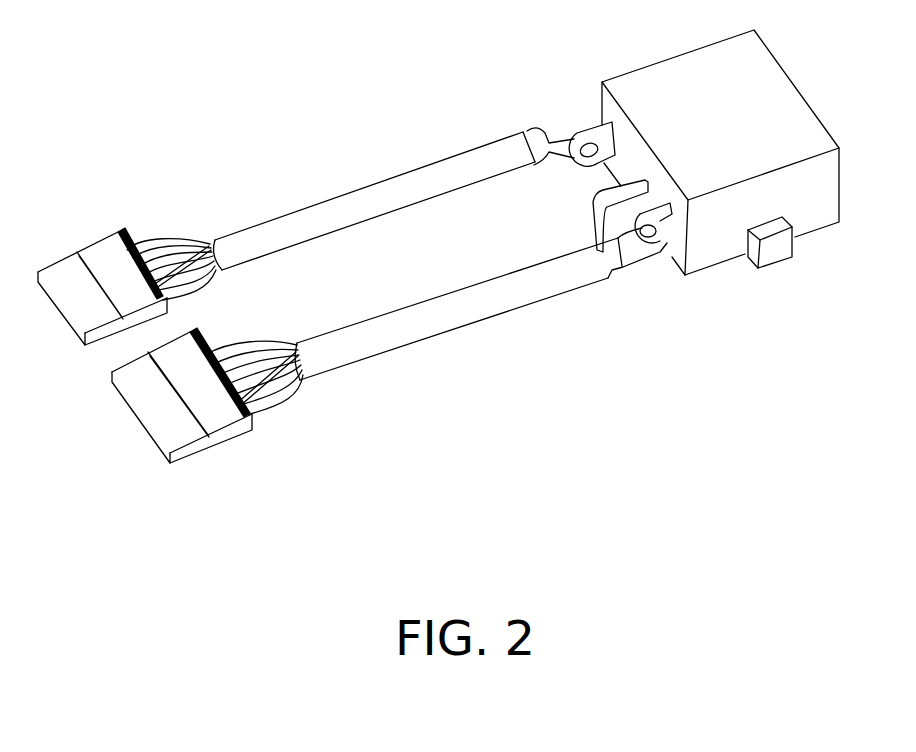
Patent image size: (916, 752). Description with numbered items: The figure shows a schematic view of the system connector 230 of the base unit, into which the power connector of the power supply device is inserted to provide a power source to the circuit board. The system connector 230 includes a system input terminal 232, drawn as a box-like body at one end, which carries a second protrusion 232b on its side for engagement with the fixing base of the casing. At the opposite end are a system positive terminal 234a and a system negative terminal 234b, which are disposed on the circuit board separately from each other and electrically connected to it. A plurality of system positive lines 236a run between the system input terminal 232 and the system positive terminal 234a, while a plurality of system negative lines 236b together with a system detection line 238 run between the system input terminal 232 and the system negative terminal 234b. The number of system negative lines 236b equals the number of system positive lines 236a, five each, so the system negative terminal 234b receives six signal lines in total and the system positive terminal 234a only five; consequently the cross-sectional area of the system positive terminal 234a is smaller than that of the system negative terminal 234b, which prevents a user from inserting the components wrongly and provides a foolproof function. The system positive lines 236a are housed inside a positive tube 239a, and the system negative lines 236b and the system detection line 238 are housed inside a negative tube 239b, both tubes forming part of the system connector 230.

The system connector 230 is at (720, 412).
The system input terminal 232 is at (783, 102).
The second protrusion 232b is at (779, 268).
The system positive terminal 234a is at (70, 277).
The system negative terminal 234b is at (212, 412).
The system positive lines 236a is at (193, 244).
The system negative lines 236b is at (302, 400).
The system detection line 238 is at (246, 347).
The positive tube 239a is at (410, 190).
The negative tube 239b is at (480, 308).